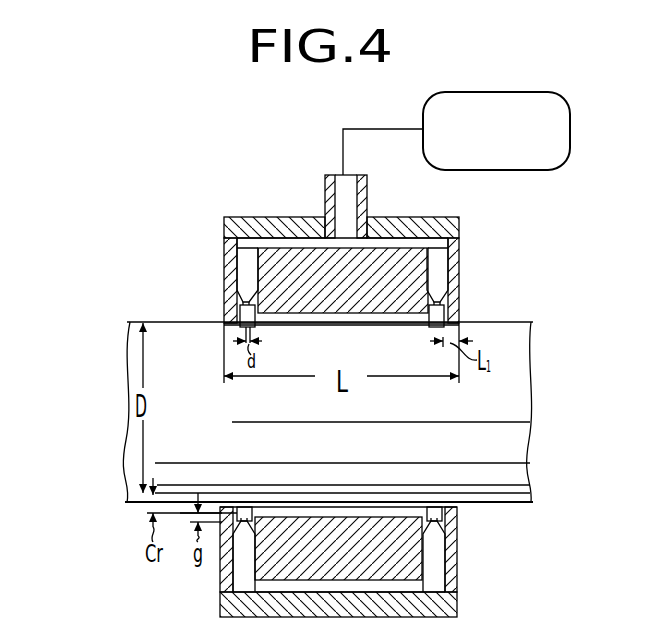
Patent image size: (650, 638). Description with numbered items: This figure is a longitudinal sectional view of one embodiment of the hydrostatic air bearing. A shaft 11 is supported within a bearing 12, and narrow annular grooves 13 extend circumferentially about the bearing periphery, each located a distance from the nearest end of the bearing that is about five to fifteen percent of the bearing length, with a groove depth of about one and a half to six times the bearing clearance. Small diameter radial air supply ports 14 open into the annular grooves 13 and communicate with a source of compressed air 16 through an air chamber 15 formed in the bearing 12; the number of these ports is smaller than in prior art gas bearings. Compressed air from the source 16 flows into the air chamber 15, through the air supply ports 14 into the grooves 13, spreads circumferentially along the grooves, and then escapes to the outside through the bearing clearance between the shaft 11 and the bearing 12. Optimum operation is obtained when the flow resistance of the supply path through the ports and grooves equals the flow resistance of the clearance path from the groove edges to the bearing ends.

The shaft 11 is at (485, 480).
The bearing 12 is at (453, 252).
The annular grooves 13 is at (238, 320).
The air supply ports 14 is at (243, 303).
The air chamber 15 is at (404, 243).
The source of compressed air 16 is at (515, 152).